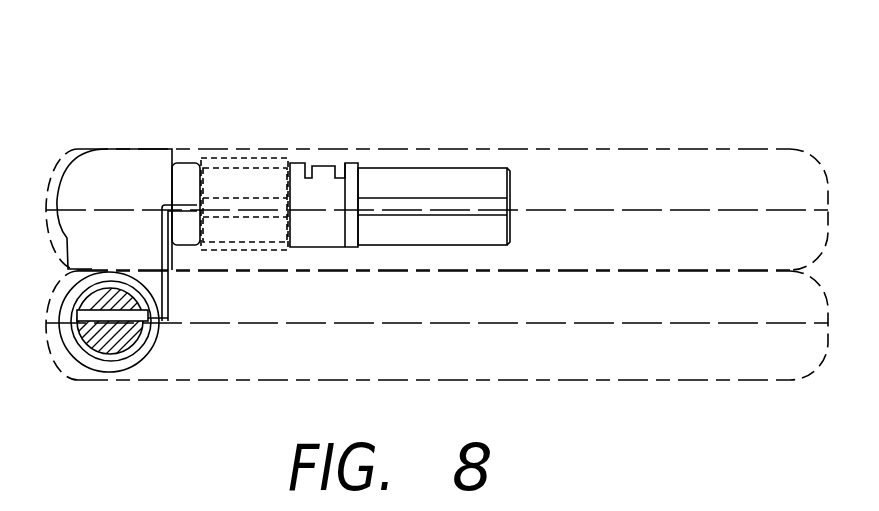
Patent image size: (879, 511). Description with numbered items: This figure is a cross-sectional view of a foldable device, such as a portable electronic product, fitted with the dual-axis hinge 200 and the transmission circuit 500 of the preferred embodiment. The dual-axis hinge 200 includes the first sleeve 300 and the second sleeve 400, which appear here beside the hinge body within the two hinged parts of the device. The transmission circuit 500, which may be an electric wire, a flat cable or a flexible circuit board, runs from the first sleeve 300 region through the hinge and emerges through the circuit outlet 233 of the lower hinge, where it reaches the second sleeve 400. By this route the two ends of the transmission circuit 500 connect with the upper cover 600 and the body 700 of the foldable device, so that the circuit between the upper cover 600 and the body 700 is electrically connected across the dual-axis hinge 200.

The dual-axis hinge 200 is at (82, 172).
The circuit outlet 233 is at (150, 319).
The first sleeve 300 is at (440, 152).
The second sleeve 400 is at (118, 347).
The transmission circuit 500 is at (247, 152).
The upper cover 600 is at (690, 172).
The body 700 is at (695, 353).